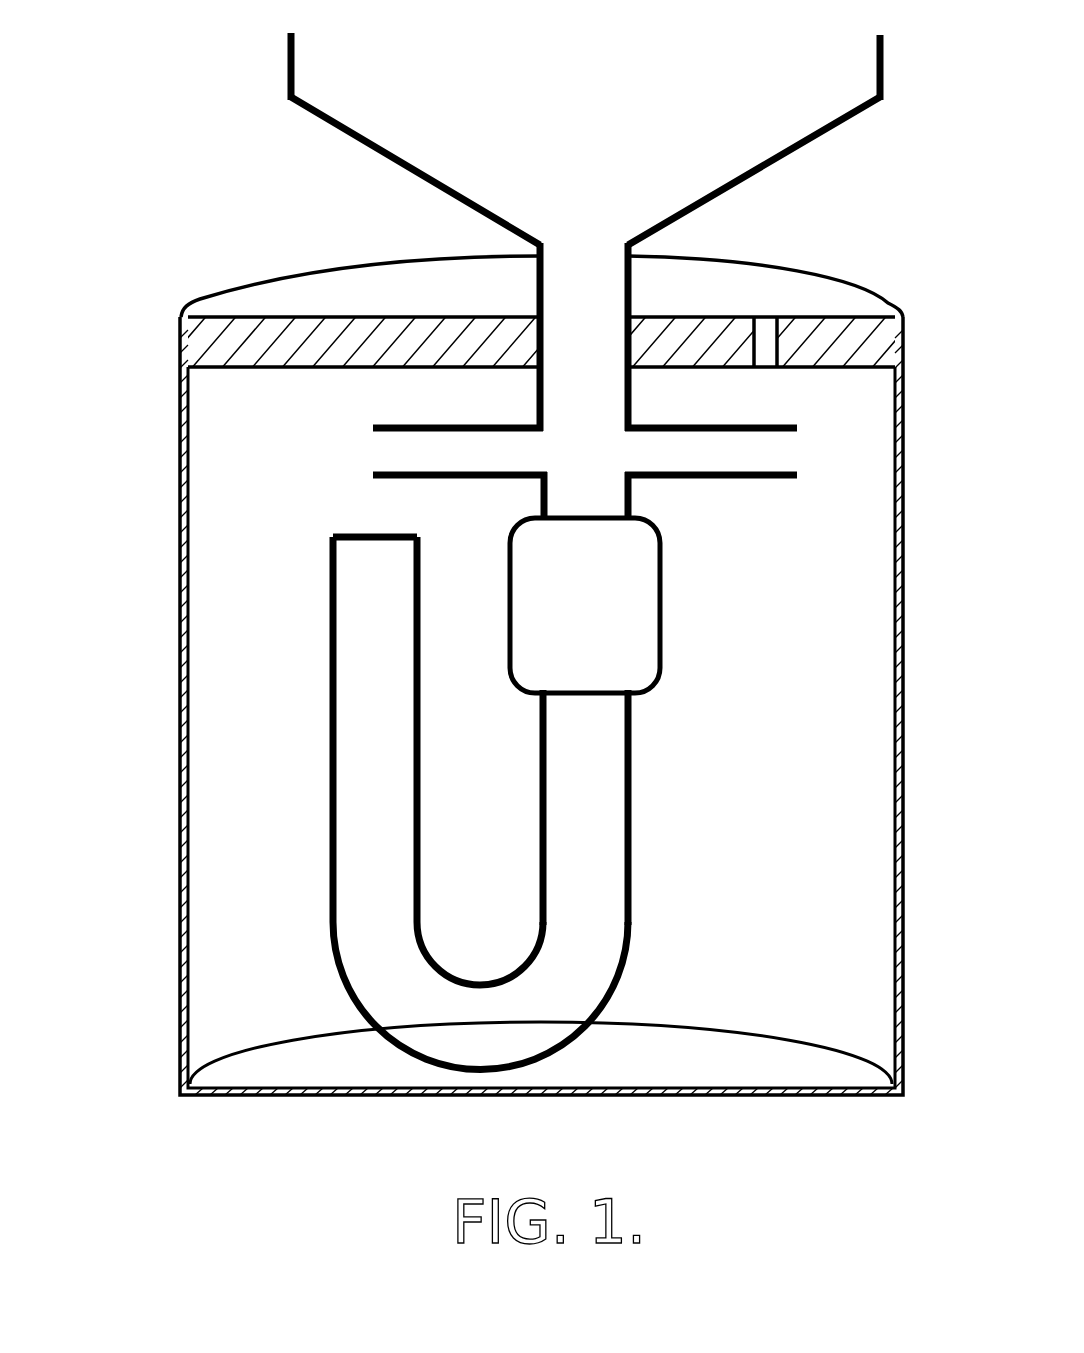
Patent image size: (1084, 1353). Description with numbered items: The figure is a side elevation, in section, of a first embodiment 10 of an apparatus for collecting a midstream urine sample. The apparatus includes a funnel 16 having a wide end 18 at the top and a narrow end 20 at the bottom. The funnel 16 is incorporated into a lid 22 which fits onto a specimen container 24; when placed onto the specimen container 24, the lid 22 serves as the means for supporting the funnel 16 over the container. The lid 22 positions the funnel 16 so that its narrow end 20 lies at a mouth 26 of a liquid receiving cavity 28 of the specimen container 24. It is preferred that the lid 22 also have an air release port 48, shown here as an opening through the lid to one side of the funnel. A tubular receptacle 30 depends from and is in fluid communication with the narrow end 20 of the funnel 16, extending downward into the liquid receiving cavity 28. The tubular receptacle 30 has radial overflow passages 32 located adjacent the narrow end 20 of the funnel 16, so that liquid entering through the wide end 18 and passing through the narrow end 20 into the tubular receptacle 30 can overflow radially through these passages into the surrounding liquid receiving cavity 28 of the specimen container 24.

The first embodiment 10 is at (296, 242).
The funnel 16 is at (730, 181).
The wide end 18 is at (873, 44).
The narrow end 20 is at (536, 283).
The lid 22 is at (228, 328).
The specimen container 24 is at (165, 700).
The mouth 26 is at (172, 368).
The liquid receiving cavity 28 is at (779, 834).
The tubular receptacle 30 is at (633, 497).
The radial overflow passages 32 is at (433, 428).
The air release port 48 is at (765, 326).